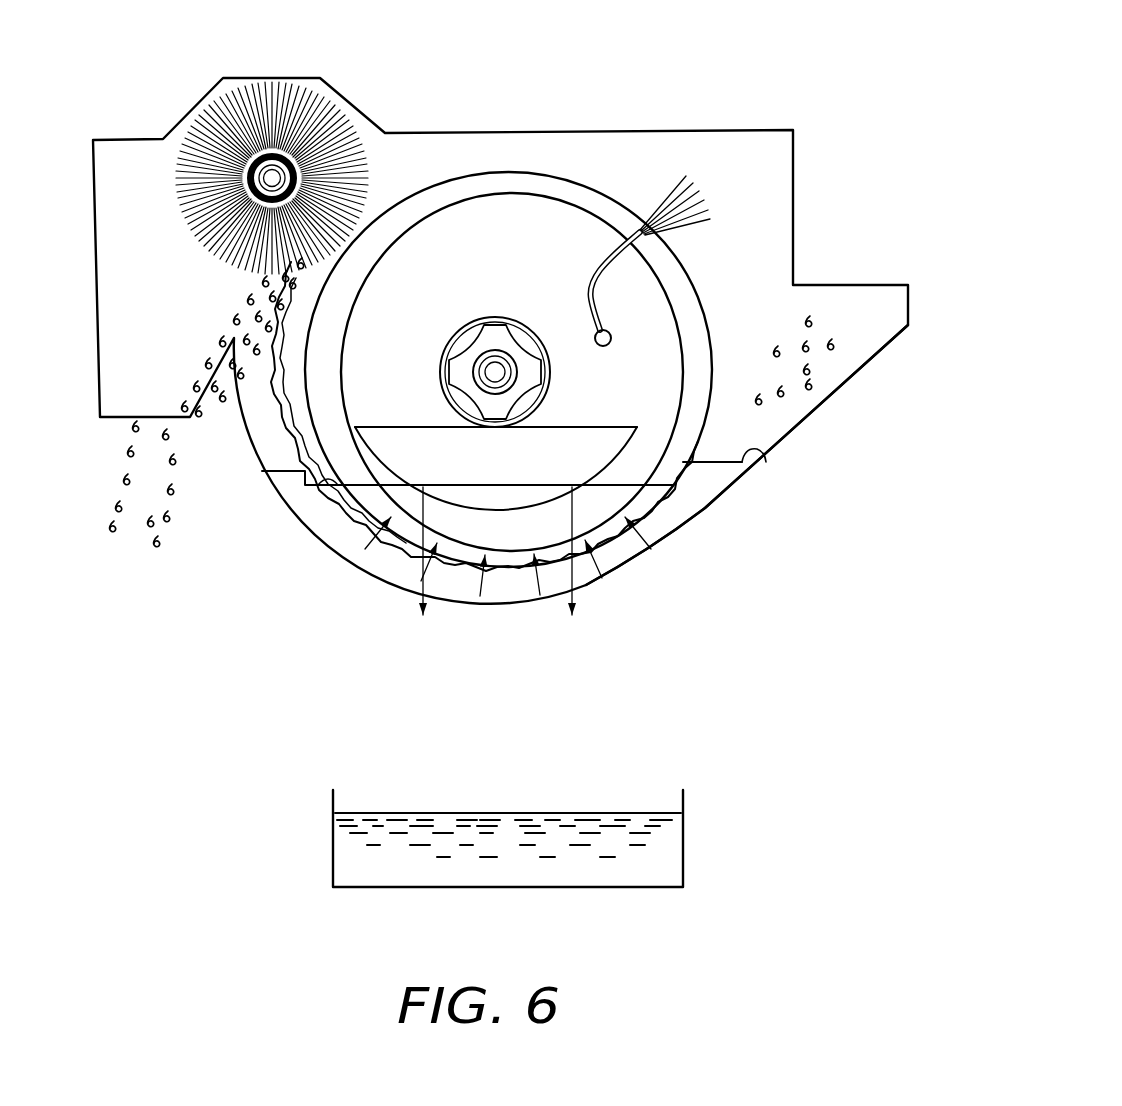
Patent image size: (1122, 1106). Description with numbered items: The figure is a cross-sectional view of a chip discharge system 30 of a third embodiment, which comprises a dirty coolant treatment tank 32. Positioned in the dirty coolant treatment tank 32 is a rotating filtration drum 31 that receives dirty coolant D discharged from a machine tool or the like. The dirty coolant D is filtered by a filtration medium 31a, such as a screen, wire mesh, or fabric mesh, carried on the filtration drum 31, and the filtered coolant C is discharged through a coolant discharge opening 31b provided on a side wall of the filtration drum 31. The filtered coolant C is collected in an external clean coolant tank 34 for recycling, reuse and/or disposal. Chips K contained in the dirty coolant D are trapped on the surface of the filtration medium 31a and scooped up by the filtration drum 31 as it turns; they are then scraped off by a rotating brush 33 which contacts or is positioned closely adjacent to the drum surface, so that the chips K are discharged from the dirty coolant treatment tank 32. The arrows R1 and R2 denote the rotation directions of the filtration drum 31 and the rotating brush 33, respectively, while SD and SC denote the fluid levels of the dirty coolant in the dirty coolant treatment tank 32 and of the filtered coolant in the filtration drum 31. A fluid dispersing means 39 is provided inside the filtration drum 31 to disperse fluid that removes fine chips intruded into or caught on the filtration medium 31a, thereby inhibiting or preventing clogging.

The chip discharge system 30 is at (472, 108).
The filtration drum 31 is at (508, 319).
The filtration medium 31a is at (606, 194).
The coolant discharge opening 31b is at (623, 423).
The dirty coolant treatment tank 32 is at (718, 504).
The rotating brush 33 is at (212, 125).
The clean coolant tank 34 is at (690, 828).
The fluid dispersing means 39 is at (618, 298).
The dirty coolant D is at (832, 322).
The chips K is at (106, 506).
The rotation direction of the filtration drum R1 is at (432, 243).
The rotation direction of the rotating brush R2 is at (245, 280).
The filtered coolant C is at (502, 646).
The fluid level of filtered coolant SC is at (318, 486).
The fluid level of dirty coolant SD is at (766, 462).